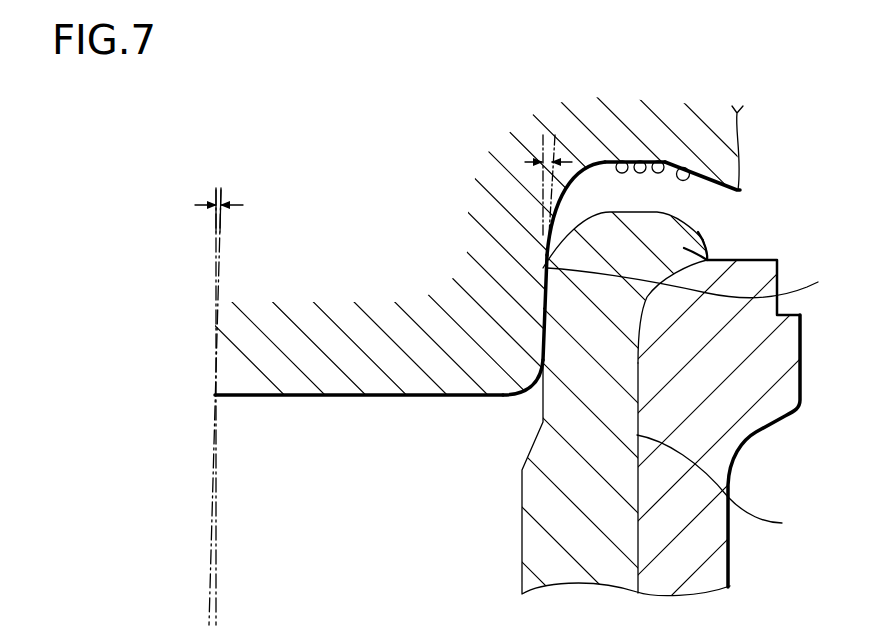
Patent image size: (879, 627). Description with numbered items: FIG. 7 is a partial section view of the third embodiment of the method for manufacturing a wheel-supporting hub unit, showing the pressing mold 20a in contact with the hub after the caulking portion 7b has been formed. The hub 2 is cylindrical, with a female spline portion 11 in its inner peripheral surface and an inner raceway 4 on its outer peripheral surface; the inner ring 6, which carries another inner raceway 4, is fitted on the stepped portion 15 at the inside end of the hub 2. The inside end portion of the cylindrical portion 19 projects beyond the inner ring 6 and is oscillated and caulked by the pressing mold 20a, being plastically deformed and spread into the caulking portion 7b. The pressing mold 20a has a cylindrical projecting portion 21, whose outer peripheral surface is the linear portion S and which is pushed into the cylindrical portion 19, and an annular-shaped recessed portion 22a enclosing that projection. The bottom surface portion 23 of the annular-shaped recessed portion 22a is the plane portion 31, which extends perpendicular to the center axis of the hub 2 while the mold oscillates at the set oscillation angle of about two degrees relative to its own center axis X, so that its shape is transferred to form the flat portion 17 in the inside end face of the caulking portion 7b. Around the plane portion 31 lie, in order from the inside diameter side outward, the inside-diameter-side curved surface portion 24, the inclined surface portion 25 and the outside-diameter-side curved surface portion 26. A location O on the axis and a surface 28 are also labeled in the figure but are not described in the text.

The hub 2 is at (484, 378).
The inner raceway 4 is at (755, 435).
The inner ring 6 is at (570, 313).
The caulking portion 7b is at (683, 247).
The female spline portion 11 is at (520, 514).
The stepped portion 15 is at (723, 486).
The flat portion 17 is at (624, 208).
The cylindrical portion 19 is at (580, 370).
The pressing mold 20a is at (505, 122).
The cylindrical projecting portion 21 is at (439, 313).
The annular-shaped recessed portion 22a is at (618, 160).
The bottom surface portion 23 is at (640, 160).
The inside-diameter-side curved surface portion 24 is at (658, 160).
The inclined surface portion 25 is at (682, 165).
The outside-diameter-side curved surface portion 26 is at (725, 190).
The flange inner side face 28 is at (373, 396).
The plane portion 31 is at (603, 166).
The linear portion S is at (688, 283).
The reference point O is at (215, 395).
The center axis of the pressing mold X is at (222, 232).